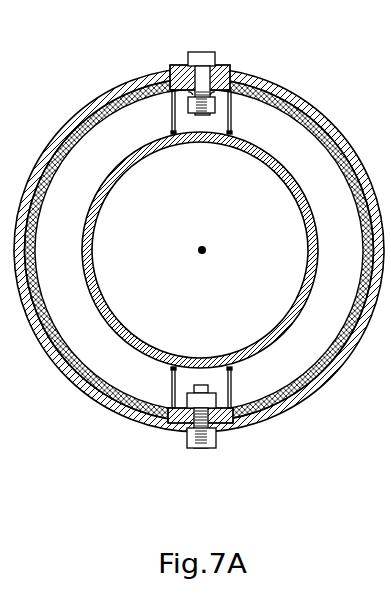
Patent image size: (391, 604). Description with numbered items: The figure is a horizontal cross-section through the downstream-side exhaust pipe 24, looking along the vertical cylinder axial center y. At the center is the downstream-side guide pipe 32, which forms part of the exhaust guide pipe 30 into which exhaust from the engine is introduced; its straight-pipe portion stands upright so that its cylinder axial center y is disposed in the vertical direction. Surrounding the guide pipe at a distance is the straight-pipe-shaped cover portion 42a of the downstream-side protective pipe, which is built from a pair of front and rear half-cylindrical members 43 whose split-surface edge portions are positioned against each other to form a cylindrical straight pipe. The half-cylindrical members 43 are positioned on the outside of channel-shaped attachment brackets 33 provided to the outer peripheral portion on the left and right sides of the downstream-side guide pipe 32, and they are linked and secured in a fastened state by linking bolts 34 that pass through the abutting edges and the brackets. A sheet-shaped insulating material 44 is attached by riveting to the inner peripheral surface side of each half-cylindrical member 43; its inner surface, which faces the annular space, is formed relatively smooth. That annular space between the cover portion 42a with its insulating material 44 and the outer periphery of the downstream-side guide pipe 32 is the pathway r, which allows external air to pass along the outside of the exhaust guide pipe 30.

The downstream-side exhaust pipe 24 is at (199, 252).
The half-cylindrical member 43 is at (199, 257).
The straight-pipe-shaped cover portion 42a is at (317, 107).
The sheet-shaped insulating material 44 is at (346, 164).
The channel-shaped attachment bracket 33 is at (173, 116).
The linking bolt 34 is at (203, 52).
The downstream-side guide pipe 32 is at (200, 250).
The exhaust guide pipe 30 is at (103, 283).
The cylinder axial center y is at (203, 249).
The pathway r is at (67, 182).